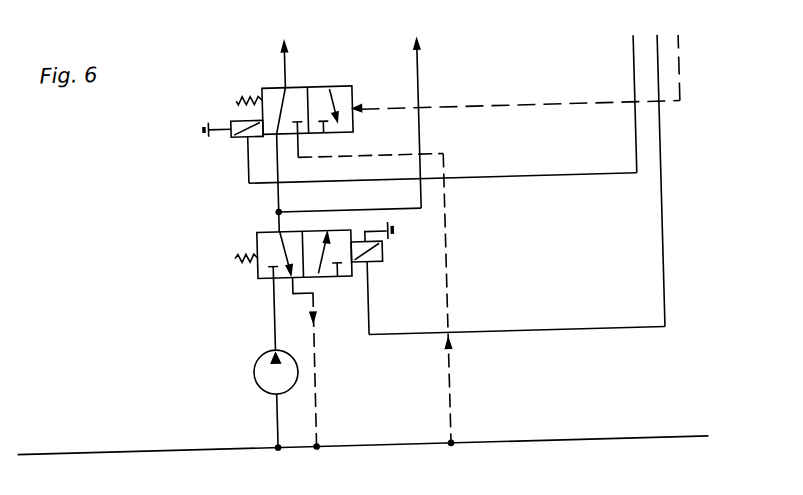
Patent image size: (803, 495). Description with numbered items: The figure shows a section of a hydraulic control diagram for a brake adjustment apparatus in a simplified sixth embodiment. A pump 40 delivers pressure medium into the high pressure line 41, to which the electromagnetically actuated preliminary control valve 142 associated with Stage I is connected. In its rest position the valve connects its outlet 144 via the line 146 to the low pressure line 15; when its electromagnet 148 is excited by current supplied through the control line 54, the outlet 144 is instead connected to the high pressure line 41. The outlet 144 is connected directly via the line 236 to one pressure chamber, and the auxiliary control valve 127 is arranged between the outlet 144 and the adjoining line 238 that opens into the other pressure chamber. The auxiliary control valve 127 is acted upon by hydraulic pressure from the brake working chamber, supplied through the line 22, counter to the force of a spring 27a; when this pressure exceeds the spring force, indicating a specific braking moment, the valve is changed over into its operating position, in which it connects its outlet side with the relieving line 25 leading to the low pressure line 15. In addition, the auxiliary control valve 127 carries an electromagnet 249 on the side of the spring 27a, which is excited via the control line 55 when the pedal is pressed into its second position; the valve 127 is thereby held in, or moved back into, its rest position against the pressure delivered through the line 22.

The low pressure line 15 is at (82, 447).
The pump 40 is at (258, 384).
The high pressure line 41 is at (274, 325).
The preliminary control valve 142 is at (262, 268).
The electromagnet 148 is at (384, 265).
The control line 54 is at (666, 150).
The line 146 is at (312, 410).
The outlet 144 is at (280, 221).
The line 236 is at (426, 69).
The spring 27a is at (242, 100).
The auxiliary control valve 127 is at (282, 96).
The line 238 is at (292, 66).
The electromagnet 249 is at (240, 136).
The control line 55 is at (640, 148).
The line 22 is at (548, 113).
The relieving line 25 is at (448, 300).